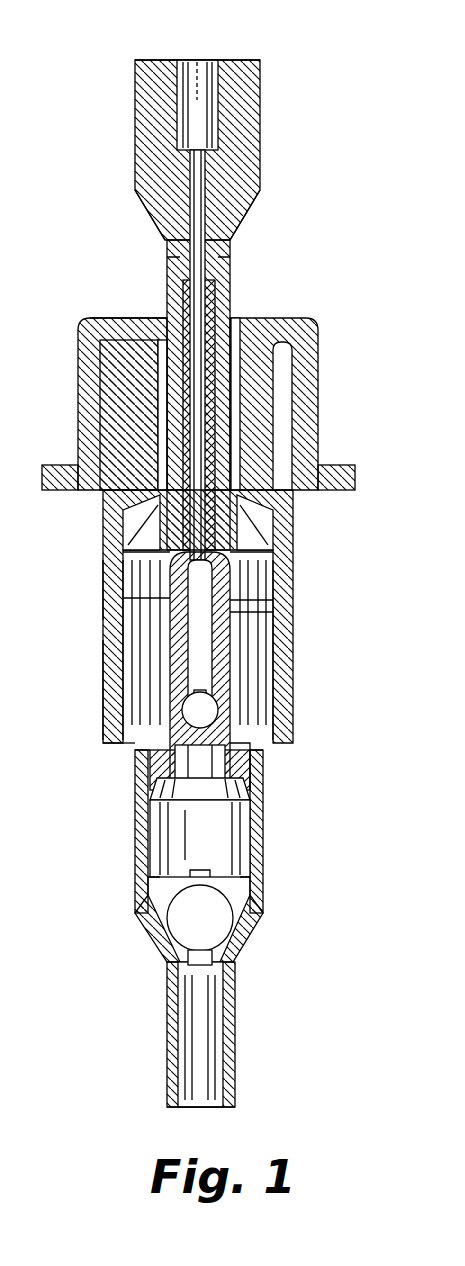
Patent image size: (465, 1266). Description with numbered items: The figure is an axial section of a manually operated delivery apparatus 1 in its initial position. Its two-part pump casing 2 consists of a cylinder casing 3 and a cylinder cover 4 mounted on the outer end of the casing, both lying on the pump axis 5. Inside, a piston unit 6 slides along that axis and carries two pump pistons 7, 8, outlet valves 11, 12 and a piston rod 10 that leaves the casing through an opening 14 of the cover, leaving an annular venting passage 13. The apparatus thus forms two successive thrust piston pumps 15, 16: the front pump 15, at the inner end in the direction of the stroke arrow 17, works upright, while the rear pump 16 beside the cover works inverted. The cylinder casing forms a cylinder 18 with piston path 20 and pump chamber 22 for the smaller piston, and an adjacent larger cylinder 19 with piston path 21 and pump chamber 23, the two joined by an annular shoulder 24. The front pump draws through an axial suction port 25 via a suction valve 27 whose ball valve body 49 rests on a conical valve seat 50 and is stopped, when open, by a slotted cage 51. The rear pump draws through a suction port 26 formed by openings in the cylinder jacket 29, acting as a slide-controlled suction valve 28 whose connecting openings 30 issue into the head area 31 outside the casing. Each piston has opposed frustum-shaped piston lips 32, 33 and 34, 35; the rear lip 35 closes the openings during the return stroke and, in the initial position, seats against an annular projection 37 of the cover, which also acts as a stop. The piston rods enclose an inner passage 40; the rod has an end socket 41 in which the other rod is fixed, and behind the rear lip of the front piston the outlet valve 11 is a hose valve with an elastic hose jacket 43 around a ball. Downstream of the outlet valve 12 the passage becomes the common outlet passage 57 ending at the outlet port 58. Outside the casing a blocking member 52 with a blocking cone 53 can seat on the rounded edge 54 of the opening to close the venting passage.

The delivery apparatus 1 is at (333, 182).
The pump casing 2 is at (80, 722).
The cylinder casing 3 is at (118, 756).
The cylinder cover 4 is at (310, 320).
The pump axis 5 is at (197, 60).
The piston unit 6 is at (258, 606).
The pump piston 7 is at (150, 776).
The pump piston 8 is at (140, 532).
The piston rod 10 is at (160, 362).
The outlet valve 11 is at (248, 702).
The outlet valve 12 is at (206, 536).
The venting passage 13 is at (145, 318).
The opening 14 is at (158, 398).
The thrust piston pump 15 is at (85, 862).
The thrust piston pump 16 is at (88, 642).
The arrow 17 is at (128, 1058).
The cylinder 18 is at (134, 888).
The cylinder 19 is at (103, 664).
The piston path 20 is at (148, 822).
The piston path 21 is at (103, 622).
The pump chamber 22 is at (245, 840).
The pump chamber 23 is at (272, 635).
The annular shoulder 24 is at (145, 738).
The suction port 25 is at (236, 1056).
The suction port 26 is at (128, 560).
The suction valve 27 is at (243, 938).
The suction valve 28 is at (262, 600).
The cylinder jacket 29 is at (128, 598).
The connecting openings 30 is at (273, 572).
The head area 31 is at (60, 492).
The piston lip 32 is at (250, 798).
The piston lip 33 is at (256, 776).
The piston lip 34 is at (272, 548).
The piston lip 35 is at (330, 468).
The annular projection 37 is at (212, 478).
The inner passage 40 is at (285, 360).
The end socket 41 is at (240, 648).
The hose jacket 43 is at (262, 737).
The valve body 49 is at (180, 930).
The valve seat 50 is at (200, 918).
The cage 51 is at (213, 872).
The blocking member 52 is at (250, 125).
The blocking cone 53 is at (244, 226).
The edge 54 is at (238, 332).
The outlet passage 57 is at (183, 282).
The outlet port 58 is at (197, 150).